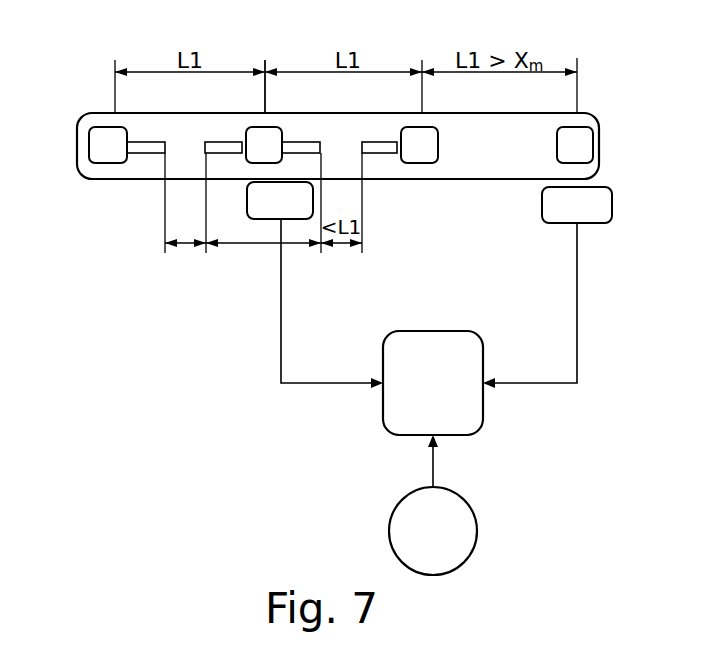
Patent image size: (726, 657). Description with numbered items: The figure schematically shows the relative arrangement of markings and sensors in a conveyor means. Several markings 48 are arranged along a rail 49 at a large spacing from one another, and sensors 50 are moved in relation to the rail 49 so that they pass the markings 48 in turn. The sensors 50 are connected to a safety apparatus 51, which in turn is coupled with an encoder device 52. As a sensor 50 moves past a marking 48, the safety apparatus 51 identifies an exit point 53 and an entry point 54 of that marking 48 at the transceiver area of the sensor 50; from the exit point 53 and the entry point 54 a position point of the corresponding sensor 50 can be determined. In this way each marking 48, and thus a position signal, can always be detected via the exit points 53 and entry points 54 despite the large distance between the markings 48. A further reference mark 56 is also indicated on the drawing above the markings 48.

The transducer 48 is at (100, 126).
The gap 49 is at (490, 140).
The signal handler 50 is at (262, 224).
The control unit 51 is at (465, 413).
The sensor 52 is at (467, 525).
The first electrode 53 is at (165, 260).
The second electrode 54 is at (206, 260).
The reference position 56 is at (264, 57).